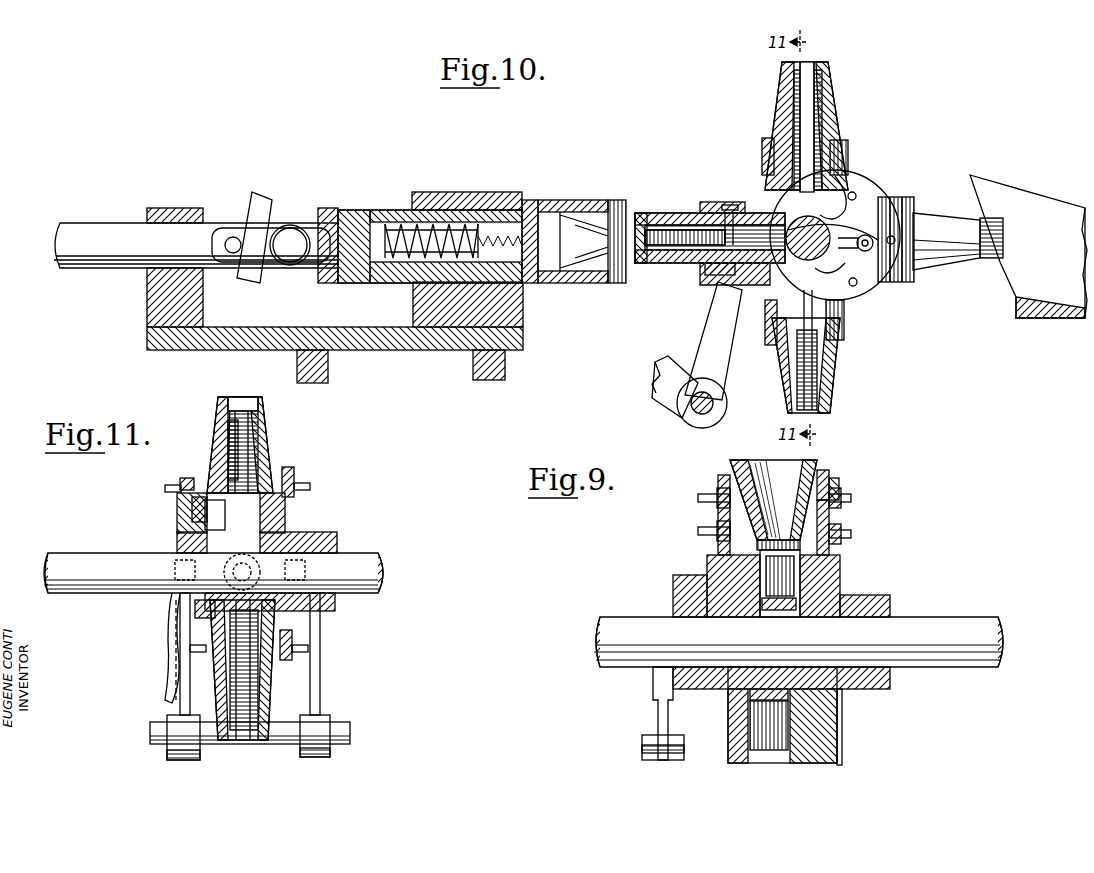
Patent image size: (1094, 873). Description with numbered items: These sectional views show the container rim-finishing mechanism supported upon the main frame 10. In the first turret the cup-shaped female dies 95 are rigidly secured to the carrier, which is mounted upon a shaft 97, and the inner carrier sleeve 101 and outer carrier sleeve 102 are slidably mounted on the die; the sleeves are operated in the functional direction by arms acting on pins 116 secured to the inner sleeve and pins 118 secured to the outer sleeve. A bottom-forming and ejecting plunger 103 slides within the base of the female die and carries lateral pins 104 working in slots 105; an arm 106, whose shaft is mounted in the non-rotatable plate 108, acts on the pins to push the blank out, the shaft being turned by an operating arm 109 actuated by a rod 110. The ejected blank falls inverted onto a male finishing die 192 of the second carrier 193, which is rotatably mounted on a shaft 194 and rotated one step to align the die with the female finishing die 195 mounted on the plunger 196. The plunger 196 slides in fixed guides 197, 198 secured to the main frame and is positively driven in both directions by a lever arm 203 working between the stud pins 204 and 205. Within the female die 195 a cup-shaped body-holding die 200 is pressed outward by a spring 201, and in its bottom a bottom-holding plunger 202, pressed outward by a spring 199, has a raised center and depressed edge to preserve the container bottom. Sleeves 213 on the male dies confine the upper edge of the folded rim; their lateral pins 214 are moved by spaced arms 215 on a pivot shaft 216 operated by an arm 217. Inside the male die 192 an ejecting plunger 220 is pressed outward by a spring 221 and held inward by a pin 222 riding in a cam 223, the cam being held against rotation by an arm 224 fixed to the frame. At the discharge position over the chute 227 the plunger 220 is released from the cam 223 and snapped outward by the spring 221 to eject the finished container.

In FIG. 10, the main frame 10 is at (490, 381).
In FIG. 9, the cup-shaped die 95 is at (817, 462).
In FIG. 9, the shaft 97 is at (938, 617).
In FIG. 9, the inner carrier sleeve 101 is at (829, 478).
In FIG. 9, the outer carrier sleeve 102 is at (838, 492).
In FIG. 9, the bottom-forming and ejecting plunger 103 is at (825, 572).
In FIG. 9, the lateral pins 104 is at (838, 597).
In FIG. 9, the slots 105 is at (707, 558).
In FIG. 9, the arm 106 is at (728, 716).
In FIG. 9, the non-rotatable plate 108 is at (673, 580).
In FIG. 9, the operating arm 109 is at (656, 715).
In FIG. 9, the rod 110 is at (642, 745).
In FIG. 9, the pins 116 is at (702, 530).
In FIG. 9, the pins 118 is at (702, 496).
In FIG. 10, the male finishing die 192 is at (838, 105).
In FIG. 11, the male finishing die 192 is at (268, 445).
In FIG. 10, the second carrier 193 is at (858, 182).
In FIG. 11, the second carrier 193 is at (295, 532).
In FIG. 11, the shaft 194 is at (118, 553).
In FIG. 10, the female finishing die 195 is at (638, 213).
In FIG. 10, the plunger 196 is at (383, 210).
In FIG. 10, the fixed guide 197 is at (465, 192).
In FIG. 10, the fixed guide 198 is at (182, 208).
In FIG. 10, the spring 199 is at (530, 200).
In FIG. 10, the cup-shaped body-holding die 200 is at (580, 200).
In FIG. 10, the spring 201 is at (430, 222).
In FIG. 10, the bottom-holding plunger 202 is at (565, 200).
In FIG. 10, the lever arm 203 is at (265, 212).
In FIG. 10, the stud pin 204 is at (292, 245).
In FIG. 10, the stud pin 205 is at (234, 237).
In FIG. 10, the sleeves 213 is at (712, 202).
In FIG. 11, the sleeves 213 is at (293, 475).
In FIG. 10, the lateral pins 214 is at (730, 205).
In FIG. 11, the lateral pins 214 is at (182, 480).
In FIG. 10, the spaced arms 215 is at (705, 332).
In FIG. 11, the spaced arms 215 is at (180, 712).
In FIG. 10, the pivot shaft 216 is at (727, 404).
In FIG. 11, the pivot shaft 216 is at (345, 726).
In FIG. 10, the arm 217 is at (660, 395).
In FIG. 10, the ejecting plunger 220 is at (641, 263).
In FIG. 11, the ejecting plunger 220 is at (245, 400).
In FIG. 10, the spring 221 is at (712, 275).
In FIG. 11, the spring 221 is at (258, 430).
In FIG. 10, the pin 222 is at (812, 218).
In FIG. 11, the pin 222 is at (196, 500).
In FIG. 10, the cam 223 is at (852, 292).
In FIG. 11, the cam 223 is at (205, 518).
In FIG. 11, the arm 224 is at (168, 683).
In FIG. 10, the chute 227 is at (1056, 310).